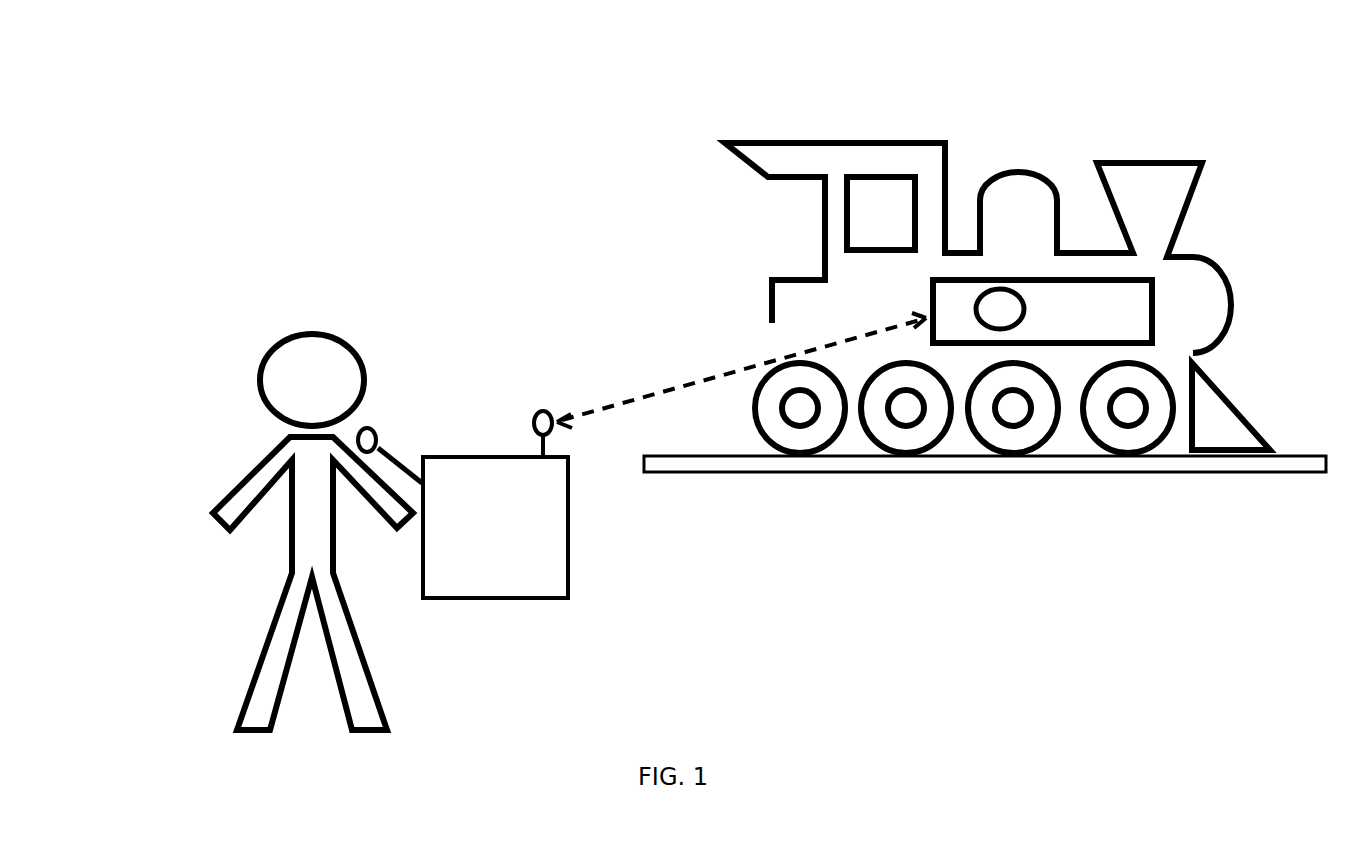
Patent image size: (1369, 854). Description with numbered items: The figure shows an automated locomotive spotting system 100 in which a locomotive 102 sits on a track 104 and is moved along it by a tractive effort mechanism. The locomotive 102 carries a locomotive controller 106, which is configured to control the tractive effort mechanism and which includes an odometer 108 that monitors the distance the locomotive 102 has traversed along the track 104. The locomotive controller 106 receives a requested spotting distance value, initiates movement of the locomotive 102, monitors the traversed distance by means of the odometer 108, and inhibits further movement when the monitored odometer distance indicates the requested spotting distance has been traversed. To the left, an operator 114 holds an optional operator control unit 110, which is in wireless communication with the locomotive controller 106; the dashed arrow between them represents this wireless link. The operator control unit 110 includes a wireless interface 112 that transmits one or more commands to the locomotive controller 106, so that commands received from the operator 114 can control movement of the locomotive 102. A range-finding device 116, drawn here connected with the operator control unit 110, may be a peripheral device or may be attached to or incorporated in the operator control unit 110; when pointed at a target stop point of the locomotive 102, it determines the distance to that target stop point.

The automated locomotive spotting system 100 is at (507, 74).
The locomotive 102 is at (795, 142).
The track 104 is at (1047, 473).
The locomotive controller 106 is at (1132, 308).
The odometer 108 is at (1003, 285).
The operator control unit 110 is at (568, 528).
The wireless interface 112 is at (552, 410).
The operator 114 is at (287, 553).
The range-finding device 116 is at (373, 427).